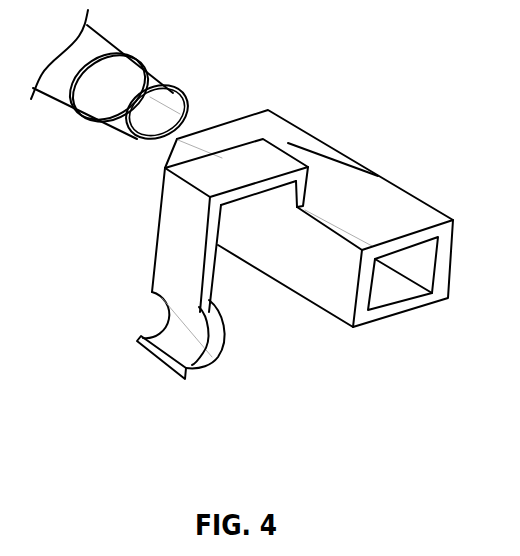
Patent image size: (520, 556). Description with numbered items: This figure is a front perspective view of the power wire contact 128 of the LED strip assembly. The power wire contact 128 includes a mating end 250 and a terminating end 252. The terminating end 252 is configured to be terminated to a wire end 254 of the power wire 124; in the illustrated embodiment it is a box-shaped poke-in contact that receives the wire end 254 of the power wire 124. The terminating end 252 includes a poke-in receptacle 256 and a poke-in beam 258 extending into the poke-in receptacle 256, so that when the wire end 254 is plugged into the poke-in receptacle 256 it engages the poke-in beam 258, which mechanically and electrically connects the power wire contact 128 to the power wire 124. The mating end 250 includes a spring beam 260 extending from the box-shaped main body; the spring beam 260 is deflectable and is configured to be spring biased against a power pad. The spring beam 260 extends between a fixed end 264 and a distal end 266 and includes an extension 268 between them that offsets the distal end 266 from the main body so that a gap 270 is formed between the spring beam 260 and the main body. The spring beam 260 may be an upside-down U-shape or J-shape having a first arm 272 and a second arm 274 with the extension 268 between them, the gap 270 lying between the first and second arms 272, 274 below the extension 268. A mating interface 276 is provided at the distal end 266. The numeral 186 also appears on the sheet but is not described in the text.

The power wire 124 is at (125, 76).
The wire end 254 is at (172, 118).
The extension 268 is at (233, 160).
The power wire contact 128 is at (309, 152).
The poke-in beam 258 is at (287, 170).
The fixed end 264 is at (316, 200).
The terminating end 252 is at (408, 252).
The poke-in receptacle 256 is at (412, 274).
The fastener 186 is at (504, 322).
The spring beam 260 is at (184, 203).
The mating end 250 is at (238, 263).
The gap 270 is at (230, 260).
The first arm 272 is at (280, 200).
The distal end 266 is at (163, 383).
The second arm 274 is at (228, 293).
The mating interface 276 is at (229, 368).